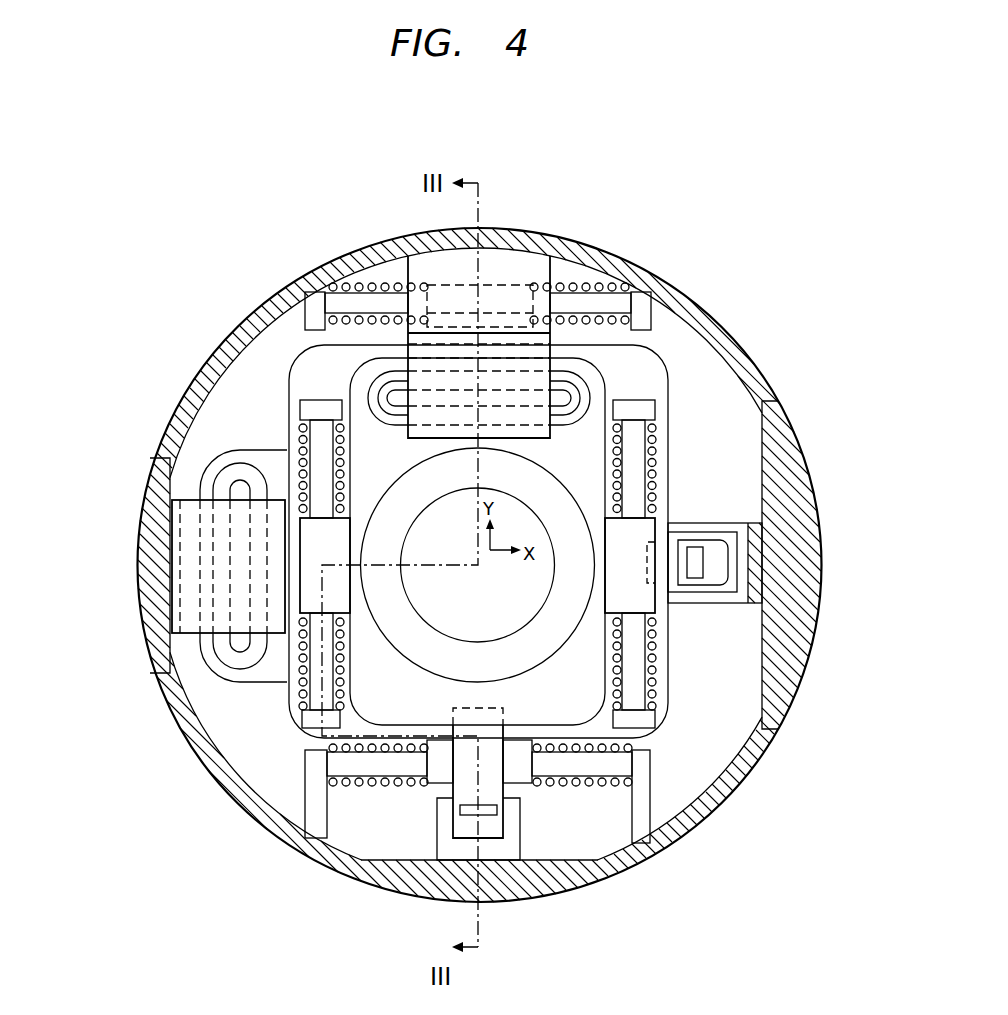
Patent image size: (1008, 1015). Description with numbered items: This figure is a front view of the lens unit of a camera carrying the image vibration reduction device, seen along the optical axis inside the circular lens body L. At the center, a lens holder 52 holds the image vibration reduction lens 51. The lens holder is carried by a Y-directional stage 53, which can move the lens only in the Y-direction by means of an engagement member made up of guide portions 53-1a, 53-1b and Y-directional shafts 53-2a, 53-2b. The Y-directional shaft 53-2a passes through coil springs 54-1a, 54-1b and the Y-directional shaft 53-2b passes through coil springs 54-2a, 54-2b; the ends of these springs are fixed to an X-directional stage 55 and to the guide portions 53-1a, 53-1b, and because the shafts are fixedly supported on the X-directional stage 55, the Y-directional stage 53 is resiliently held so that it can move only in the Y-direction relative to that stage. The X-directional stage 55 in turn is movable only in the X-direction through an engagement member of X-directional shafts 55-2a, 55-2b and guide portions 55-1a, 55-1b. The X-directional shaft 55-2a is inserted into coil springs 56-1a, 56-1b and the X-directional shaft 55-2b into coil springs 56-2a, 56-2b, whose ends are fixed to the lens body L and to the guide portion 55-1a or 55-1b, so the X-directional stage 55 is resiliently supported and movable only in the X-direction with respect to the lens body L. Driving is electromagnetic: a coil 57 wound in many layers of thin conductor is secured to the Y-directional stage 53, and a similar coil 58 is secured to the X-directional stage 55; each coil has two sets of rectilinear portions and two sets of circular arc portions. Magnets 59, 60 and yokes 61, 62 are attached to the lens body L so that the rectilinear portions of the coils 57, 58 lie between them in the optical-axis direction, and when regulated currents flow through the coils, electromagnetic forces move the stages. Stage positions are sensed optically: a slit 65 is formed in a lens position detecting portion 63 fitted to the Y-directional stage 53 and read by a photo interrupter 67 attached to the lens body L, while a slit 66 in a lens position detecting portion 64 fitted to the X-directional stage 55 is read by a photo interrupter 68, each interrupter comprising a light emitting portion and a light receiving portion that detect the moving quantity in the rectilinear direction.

The image vibration reduction lens 51 is at (435, 615).
The lens holder 52 is at (373, 590).
The Y-directional stage 53 is at (593, 730).
The guide portion 53-1a is at (643, 527).
The guide portion 53-1b is at (307, 528).
The Y-directional shaft 53-2a is at (640, 702).
The Y-directional shaft 53-2b is at (305, 428).
The coil spring 54-1a is at (658, 425).
The coil spring 54-1b is at (657, 680).
The coil spring 54-2a is at (312, 452).
The coil spring 54-2b is at (303, 668).
The X-directional stage 55 is at (653, 372).
The guide portion 55-1a is at (517, 777).
The guide portion 55-1b is at (502, 292).
The X-directional shaft 55-2a is at (558, 767).
The X-directional shaft 55-2b is at (333, 300).
The coil spring 56-1a is at (585, 785).
The coil spring 56-1b is at (353, 783).
The coil spring 56-2a is at (617, 287).
The coil spring 56-2b is at (358, 287).
The coil 57 is at (573, 380).
The coil 58 is at (227, 653).
The magnet 59 is at (410, 388).
The magnet 60 is at (240, 520).
The yoke 61 is at (385, 358).
The yoke 62 is at (177, 585).
The lens position detecting portion 63 is at (460, 815).
The lens position detecting portion 64 is at (717, 577).
The slit 65 is at (452, 853).
The slit 66 is at (700, 553).
The photo interrupter 67 is at (438, 805).
The photo interrupter 68 is at (697, 535).
The lens body L is at (780, 666).